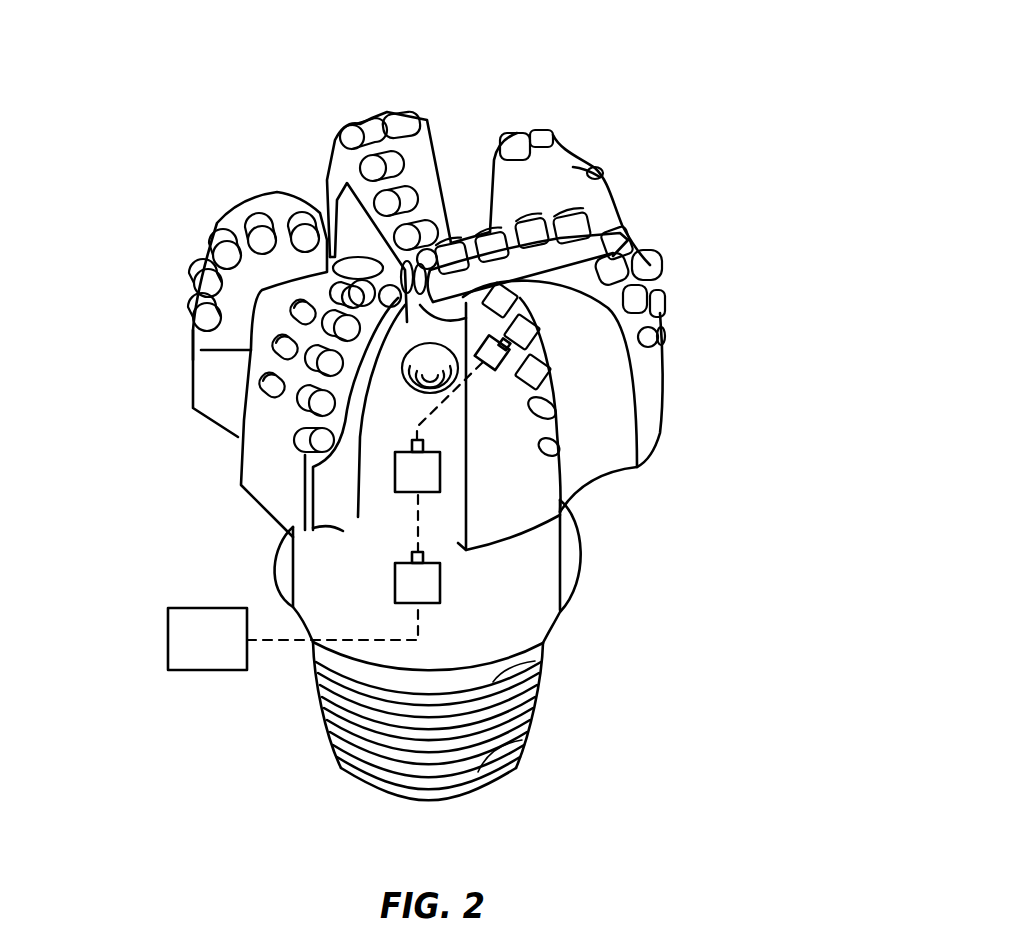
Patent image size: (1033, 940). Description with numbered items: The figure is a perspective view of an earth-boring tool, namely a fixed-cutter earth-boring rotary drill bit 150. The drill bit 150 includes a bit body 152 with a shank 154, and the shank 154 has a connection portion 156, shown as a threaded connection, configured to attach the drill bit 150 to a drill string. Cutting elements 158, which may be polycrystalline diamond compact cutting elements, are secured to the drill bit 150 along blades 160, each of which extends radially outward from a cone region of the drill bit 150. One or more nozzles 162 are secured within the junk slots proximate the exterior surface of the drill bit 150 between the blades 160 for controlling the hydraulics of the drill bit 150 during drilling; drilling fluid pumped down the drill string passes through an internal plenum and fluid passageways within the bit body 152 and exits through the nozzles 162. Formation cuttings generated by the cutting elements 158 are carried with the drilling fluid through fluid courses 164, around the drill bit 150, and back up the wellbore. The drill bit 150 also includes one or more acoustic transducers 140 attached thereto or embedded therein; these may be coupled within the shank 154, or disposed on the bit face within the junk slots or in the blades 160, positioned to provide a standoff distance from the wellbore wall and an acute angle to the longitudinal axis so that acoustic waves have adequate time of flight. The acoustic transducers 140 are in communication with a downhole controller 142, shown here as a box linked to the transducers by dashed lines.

The drill bit 150 is at (727, 109).
The bit body 152 is at (327, 562).
The shank 154 is at (545, 652).
The connection portion 156 is at (535, 730).
The cutting elements 158 is at (345, 126).
The blades 160 is at (600, 450).
The nozzles 162 is at (410, 388).
The fluid courses 164 is at (209, 429).
The acoustic transducers 140 is at (487, 337).
The downhole controller 142 is at (232, 657).